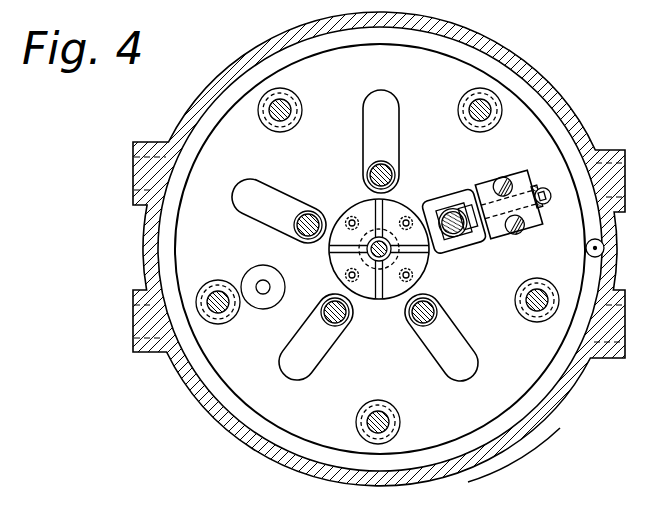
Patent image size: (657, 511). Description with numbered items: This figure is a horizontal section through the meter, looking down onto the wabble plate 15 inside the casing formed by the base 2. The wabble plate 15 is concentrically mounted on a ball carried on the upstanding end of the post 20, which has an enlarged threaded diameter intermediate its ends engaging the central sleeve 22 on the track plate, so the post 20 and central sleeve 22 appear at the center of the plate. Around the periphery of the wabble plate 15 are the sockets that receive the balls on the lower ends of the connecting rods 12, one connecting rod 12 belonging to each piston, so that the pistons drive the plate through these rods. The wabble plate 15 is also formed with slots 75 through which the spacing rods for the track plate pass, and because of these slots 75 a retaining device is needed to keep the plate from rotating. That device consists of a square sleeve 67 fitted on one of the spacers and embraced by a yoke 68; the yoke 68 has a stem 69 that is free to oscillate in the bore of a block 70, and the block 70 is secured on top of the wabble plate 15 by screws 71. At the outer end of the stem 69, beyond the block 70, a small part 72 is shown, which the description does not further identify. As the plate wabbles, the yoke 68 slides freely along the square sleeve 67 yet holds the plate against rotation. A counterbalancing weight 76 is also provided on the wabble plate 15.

The base 2 is at (563, 102).
The connecting rod 12 is at (291, 106).
The wabble plate 15 is at (505, 388).
The post 20 is at (377, 262).
The central sleeve 22 is at (374, 233).
The square sleeve 67 is at (458, 237).
The yoke 68 is at (443, 210).
The stem 69 is at (535, 194).
The block 70 is at (521, 177).
The screws 71 is at (518, 228).
The nut 72 is at (546, 202).
The slots 75 is at (378, 125).
The counterbalancing weight 76 is at (278, 287).